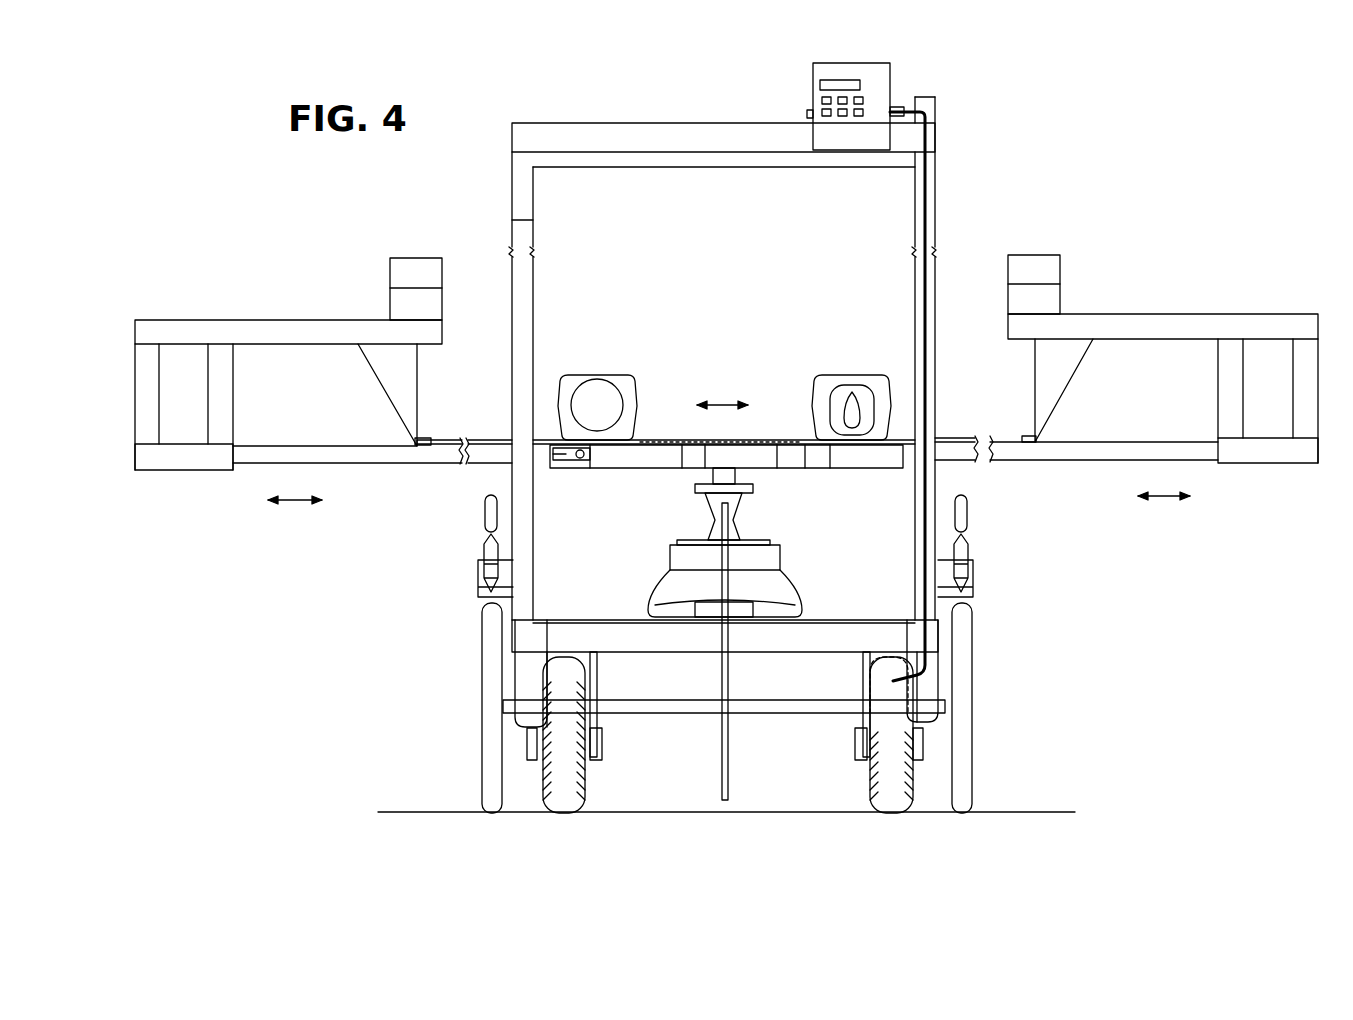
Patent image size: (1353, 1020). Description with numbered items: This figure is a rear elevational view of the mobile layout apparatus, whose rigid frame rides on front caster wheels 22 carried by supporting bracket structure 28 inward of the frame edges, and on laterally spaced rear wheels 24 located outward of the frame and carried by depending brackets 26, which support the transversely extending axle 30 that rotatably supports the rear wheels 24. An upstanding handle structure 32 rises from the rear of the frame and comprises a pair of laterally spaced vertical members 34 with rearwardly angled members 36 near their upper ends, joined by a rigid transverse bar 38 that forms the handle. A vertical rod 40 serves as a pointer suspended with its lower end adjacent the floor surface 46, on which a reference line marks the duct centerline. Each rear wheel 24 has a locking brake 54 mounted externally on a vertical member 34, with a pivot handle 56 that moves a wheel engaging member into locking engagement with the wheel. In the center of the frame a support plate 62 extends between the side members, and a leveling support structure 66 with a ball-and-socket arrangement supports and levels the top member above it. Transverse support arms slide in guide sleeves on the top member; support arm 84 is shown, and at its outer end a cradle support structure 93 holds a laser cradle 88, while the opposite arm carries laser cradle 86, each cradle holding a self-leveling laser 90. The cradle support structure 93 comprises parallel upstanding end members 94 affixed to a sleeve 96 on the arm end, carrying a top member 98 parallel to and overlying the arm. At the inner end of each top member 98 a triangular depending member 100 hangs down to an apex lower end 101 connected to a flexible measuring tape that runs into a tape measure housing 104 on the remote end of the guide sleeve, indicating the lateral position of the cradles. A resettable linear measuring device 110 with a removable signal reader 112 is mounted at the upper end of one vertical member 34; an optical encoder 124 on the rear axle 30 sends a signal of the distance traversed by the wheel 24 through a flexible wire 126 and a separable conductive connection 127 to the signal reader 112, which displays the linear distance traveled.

The caster wheels 22 is at (590, 787).
The rear wheels 24 is at (490, 746).
The depending brackets 26 is at (527, 666).
The supporting bracket structure 28 is at (597, 676).
The axle 30 is at (665, 713).
The handle structure 32 is at (761, 340).
The upstanding vertical members 34 is at (541, 314).
The rearwardly angled members 36 is at (535, 189).
The transverse bar 38 is at (563, 125).
The vertical rod 40 is at (735, 742).
The floor surface 46 is at (1052, 811).
The locking brake 54 is at (470, 565).
The pivot handle 56 is at (485, 507).
The support plate 62 is at (606, 618).
The leveling support structure 66 is at (752, 532).
The support arm 84 is at (360, 458).
The laser cradle 86 is at (1013, 295).
The laser cradle 88 is at (437, 299).
The self-leveling laser 90 is at (411, 262).
The cradle support structure 93 is at (323, 369).
The end members 94 is at (155, 392).
The sleeve 96 is at (176, 463).
The top member 98 is at (306, 320).
The triangular depending member 100 is at (385, 378).
The apex lower end 101 is at (422, 429).
The tape measure housing 104 is at (610, 375).
The linear measuring device 110 is at (830, 73).
The signal reader 112 is at (880, 72).
The optical encoder 124 is at (895, 690).
The flexible wire 126 is at (932, 472).
The separable conductive connection 127 is at (918, 101).